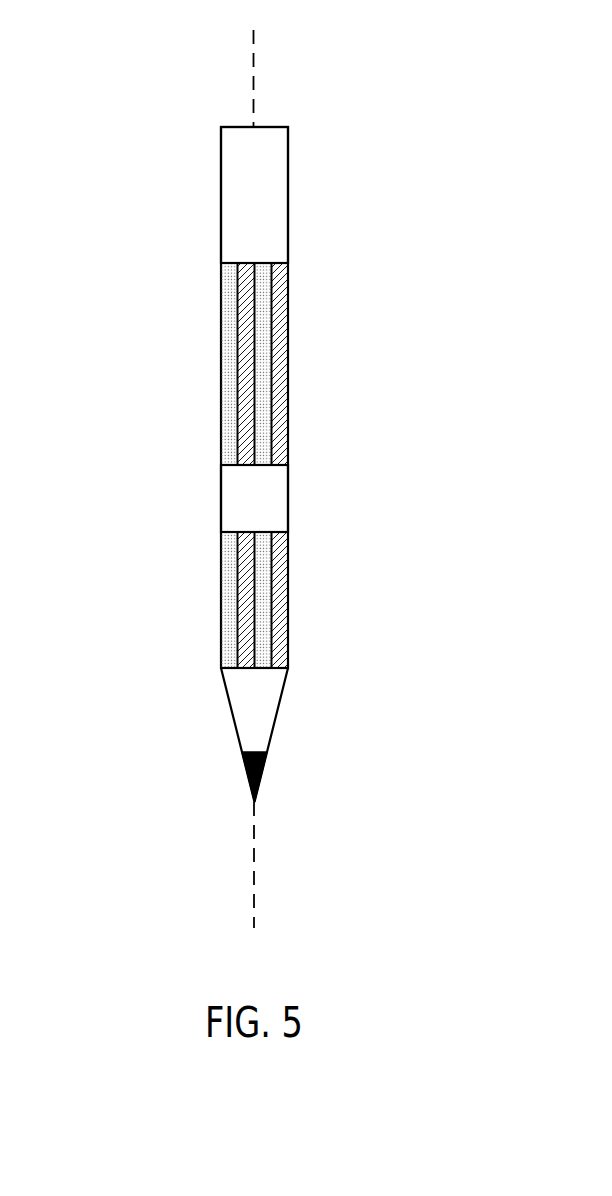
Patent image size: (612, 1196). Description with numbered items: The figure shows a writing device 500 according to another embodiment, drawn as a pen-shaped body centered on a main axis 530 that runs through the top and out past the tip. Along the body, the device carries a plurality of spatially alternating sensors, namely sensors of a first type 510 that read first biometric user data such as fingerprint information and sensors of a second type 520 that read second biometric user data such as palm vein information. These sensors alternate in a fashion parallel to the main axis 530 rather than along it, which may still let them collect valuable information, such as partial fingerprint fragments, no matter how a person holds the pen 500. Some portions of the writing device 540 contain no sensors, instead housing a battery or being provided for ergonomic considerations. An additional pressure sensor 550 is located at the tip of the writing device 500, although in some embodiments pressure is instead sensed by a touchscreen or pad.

The writing device 500 is at (118, 272).
The sensors of a first type 510 is at (221, 404).
The sensors of a second type 520 is at (288, 297).
The main axis 530 is at (253, 60).
The portions of the writing device 540 is at (288, 193).
The pressure sensor 550 is at (260, 787).